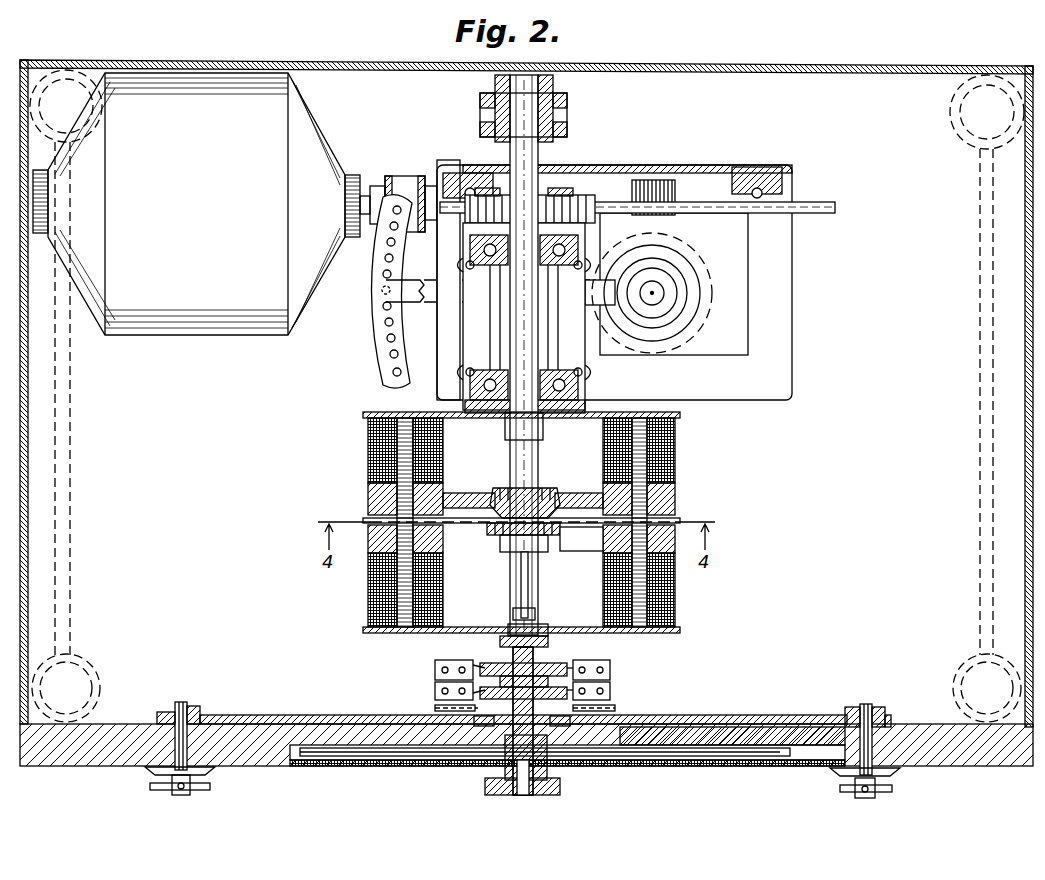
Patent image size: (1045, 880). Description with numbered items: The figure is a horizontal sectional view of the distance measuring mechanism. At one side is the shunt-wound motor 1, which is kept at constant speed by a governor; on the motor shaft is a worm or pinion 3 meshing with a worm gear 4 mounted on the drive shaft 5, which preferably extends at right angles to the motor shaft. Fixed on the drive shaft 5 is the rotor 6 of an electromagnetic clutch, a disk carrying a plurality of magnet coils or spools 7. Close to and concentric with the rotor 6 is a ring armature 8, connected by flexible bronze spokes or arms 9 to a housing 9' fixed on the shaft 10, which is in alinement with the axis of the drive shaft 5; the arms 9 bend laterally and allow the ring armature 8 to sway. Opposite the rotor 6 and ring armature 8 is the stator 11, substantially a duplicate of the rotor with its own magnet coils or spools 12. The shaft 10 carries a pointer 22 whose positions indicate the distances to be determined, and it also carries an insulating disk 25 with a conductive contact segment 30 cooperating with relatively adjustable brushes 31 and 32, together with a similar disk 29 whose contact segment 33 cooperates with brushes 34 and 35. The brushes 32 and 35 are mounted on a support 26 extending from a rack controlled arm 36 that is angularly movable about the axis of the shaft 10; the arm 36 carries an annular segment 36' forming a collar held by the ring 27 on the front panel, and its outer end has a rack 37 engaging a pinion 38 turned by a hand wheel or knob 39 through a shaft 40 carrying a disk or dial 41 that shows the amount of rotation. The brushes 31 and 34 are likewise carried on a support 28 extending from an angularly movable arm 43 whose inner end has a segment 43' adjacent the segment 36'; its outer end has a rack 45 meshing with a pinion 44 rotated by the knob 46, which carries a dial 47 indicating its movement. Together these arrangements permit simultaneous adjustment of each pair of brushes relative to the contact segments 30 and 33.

The shunt-wound motor 1 is at (297, 147).
The worm or pinion 3 is at (548, 197).
The worm gear 4 is at (575, 200).
The drive shaft 5 is at (520, 345).
The rotor 6 is at (588, 418).
The magnet coils or spools 7 is at (440, 462).
The ring armature 8 is at (650, 521).
The spokes or arms 9 is at (536, 486).
The housing 9' is at (507, 537).
The shaft 10 is at (526, 593).
The stator 11 is at (602, 546).
The magnet coils or spools 12 is at (440, 598).
The pointer 22 is at (722, 750).
The insulating disk 25 is at (556, 660).
The support 26 is at (612, 696).
The ring 27 is at (440, 710).
The support 28 is at (440, 678).
The disk 29 is at (618, 710).
The contact segment 30 is at (562, 660).
The brush 31 is at (470, 660).
The brush 32 is at (578, 660).
The contact segment 33 is at (482, 668).
The brush 34 is at (450, 686).
The brush 35 is at (610, 684).
The rack controlled arm 36 is at (732, 718).
The annular segment 36' is at (471, 756).
The rack 37 is at (848, 716).
The pinion 38 is at (876, 712).
The hand wheel or knob 39 is at (850, 792).
The shaft 40 is at (870, 760).
The disk or dial 41 is at (835, 774).
The arm 43 is at (523, 706).
The segment 43' is at (576, 755).
The pinion 44 is at (190, 706).
The rack 45 is at (205, 712).
The hand-wheel or knob 46 is at (205, 786).
The dial 47 is at (150, 776).